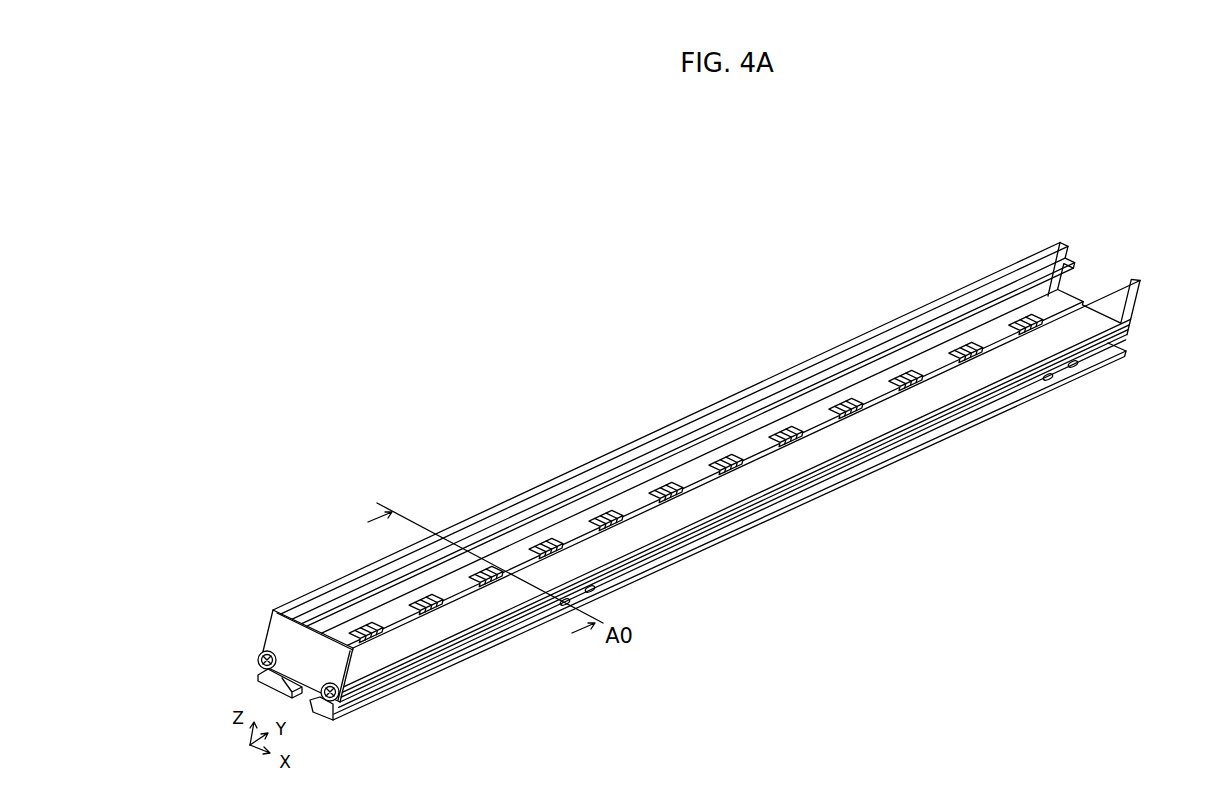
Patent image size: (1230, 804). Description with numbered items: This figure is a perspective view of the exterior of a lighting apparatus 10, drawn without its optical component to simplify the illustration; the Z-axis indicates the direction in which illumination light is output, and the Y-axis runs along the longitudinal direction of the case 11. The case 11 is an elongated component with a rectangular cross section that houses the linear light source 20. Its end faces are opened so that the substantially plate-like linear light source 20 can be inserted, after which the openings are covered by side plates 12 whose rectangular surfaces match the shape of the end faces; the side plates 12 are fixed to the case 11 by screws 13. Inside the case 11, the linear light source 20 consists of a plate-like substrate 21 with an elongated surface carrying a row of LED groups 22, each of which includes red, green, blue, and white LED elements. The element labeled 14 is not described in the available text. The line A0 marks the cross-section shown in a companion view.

The lighting apparatus 10 is at (855, 258).
The case 11 is at (1119, 311).
The side plate 12 is at (283, 632).
The screw 13 is at (258, 660).
The engaging lip 14 is at (1063, 268).
The linear light source 20 is at (748, 317).
The substrate 21 is at (750, 437).
The LED group 22 is at (677, 480).